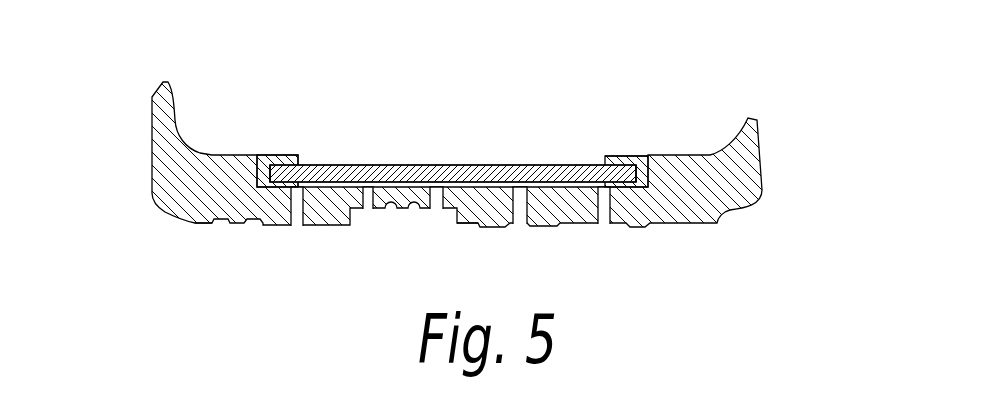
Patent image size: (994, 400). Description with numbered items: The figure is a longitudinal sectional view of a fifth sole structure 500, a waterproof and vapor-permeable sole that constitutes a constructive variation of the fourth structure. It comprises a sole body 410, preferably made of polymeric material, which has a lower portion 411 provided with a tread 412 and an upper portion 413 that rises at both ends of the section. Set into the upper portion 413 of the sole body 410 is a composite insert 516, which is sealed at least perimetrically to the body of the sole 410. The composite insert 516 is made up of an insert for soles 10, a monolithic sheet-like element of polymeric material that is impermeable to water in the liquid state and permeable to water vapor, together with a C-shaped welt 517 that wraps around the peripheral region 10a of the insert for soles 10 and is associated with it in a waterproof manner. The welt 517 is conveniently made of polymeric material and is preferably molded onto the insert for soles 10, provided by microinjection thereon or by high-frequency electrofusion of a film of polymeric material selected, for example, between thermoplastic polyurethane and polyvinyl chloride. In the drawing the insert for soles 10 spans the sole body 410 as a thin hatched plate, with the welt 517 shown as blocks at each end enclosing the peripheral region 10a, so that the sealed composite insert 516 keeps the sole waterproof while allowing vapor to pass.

The fifth sole structure 500 is at (443, 173).
The sole body 410 is at (165, 211).
The lower portion 411 is at (221, 228).
The tread 412 is at (492, 225).
The upper portion 413 is at (247, 157).
The composite insert 516 is at (610, 155).
The C-shaped welt 517 is at (296, 157).
The insert for soles 10 is at (345, 166).
The peripheral region 10a is at (272, 182).